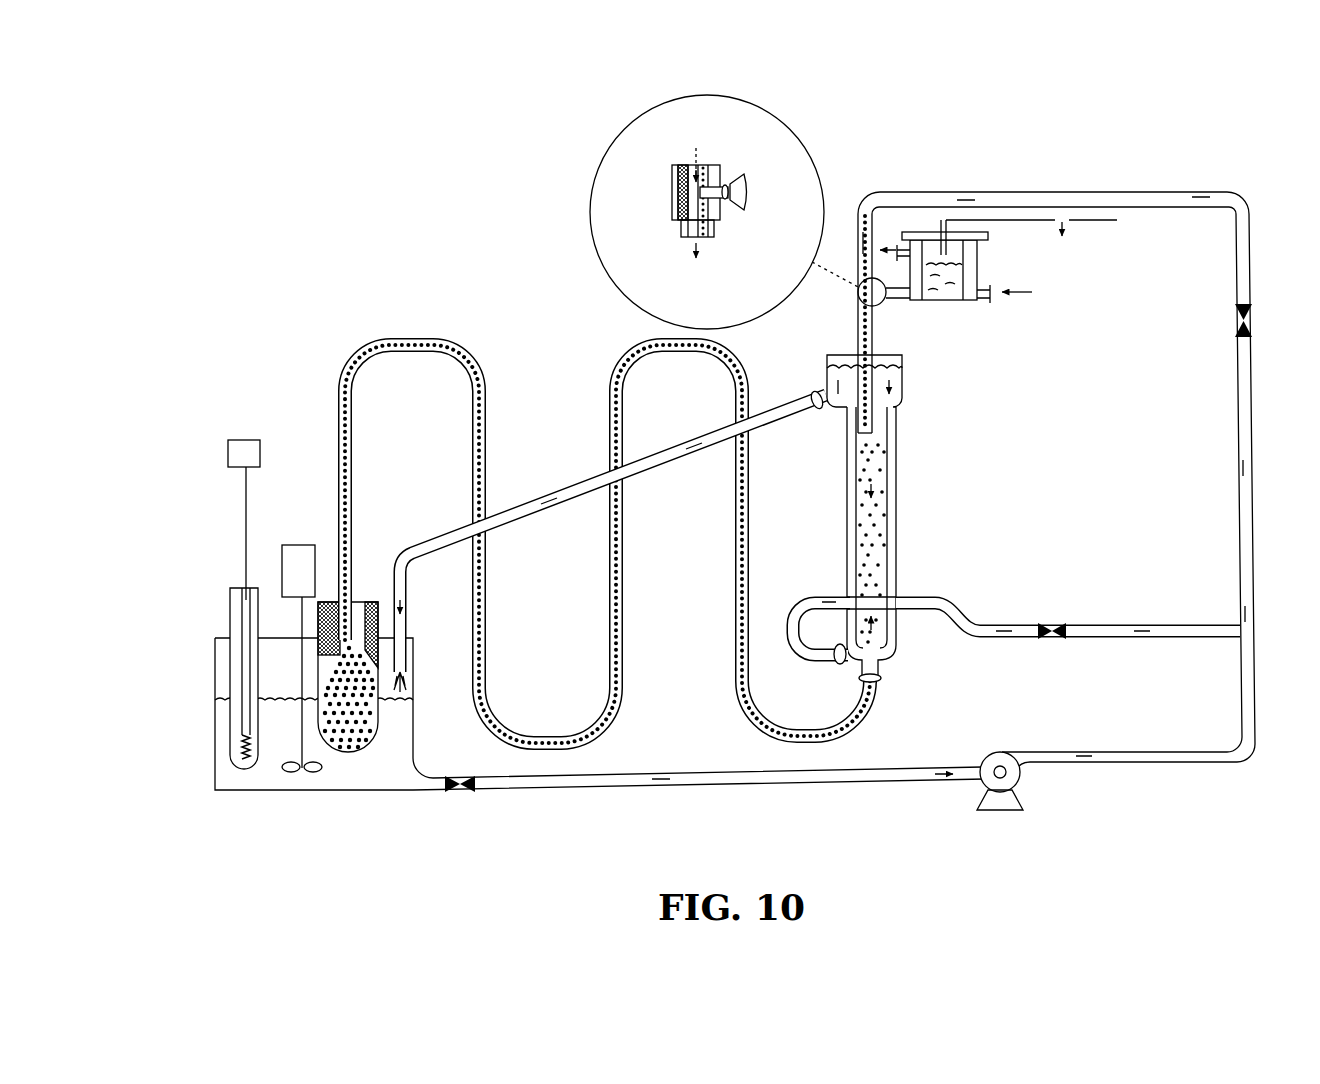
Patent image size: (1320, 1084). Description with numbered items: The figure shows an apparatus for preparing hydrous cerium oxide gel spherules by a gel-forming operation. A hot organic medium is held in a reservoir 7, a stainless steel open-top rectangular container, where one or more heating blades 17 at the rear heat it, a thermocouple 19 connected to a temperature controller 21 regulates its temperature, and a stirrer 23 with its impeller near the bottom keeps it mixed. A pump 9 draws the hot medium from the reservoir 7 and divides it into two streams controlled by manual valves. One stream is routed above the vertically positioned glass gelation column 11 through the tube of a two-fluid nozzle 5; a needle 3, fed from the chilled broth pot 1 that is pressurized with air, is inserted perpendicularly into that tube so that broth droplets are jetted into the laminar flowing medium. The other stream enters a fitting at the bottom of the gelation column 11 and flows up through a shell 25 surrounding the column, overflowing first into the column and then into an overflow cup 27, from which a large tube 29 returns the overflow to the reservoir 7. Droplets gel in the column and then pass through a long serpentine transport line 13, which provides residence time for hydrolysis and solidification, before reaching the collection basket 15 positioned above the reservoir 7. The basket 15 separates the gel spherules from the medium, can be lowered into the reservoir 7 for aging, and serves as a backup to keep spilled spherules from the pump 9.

The broth pot 1 is at (938, 306).
The needle 3 is at (729, 182).
The two-fluid nozzle 5 is at (888, 312).
The reservoir 7 is at (272, 796).
The pump 9 is at (1005, 814).
The gelation column 11 is at (900, 498).
The serpentine transport line 13 is at (482, 361).
The collection basket 15 is at (357, 756).
The heating blade 17 is at (228, 604).
The thermocouple 19 is at (240, 534).
The temperature controller 21 is at (247, 438).
The stirrer 23 is at (303, 543).
The shell 25 is at (898, 443).
The overflow cup 27 is at (906, 389).
The large tube 29 is at (805, 418).